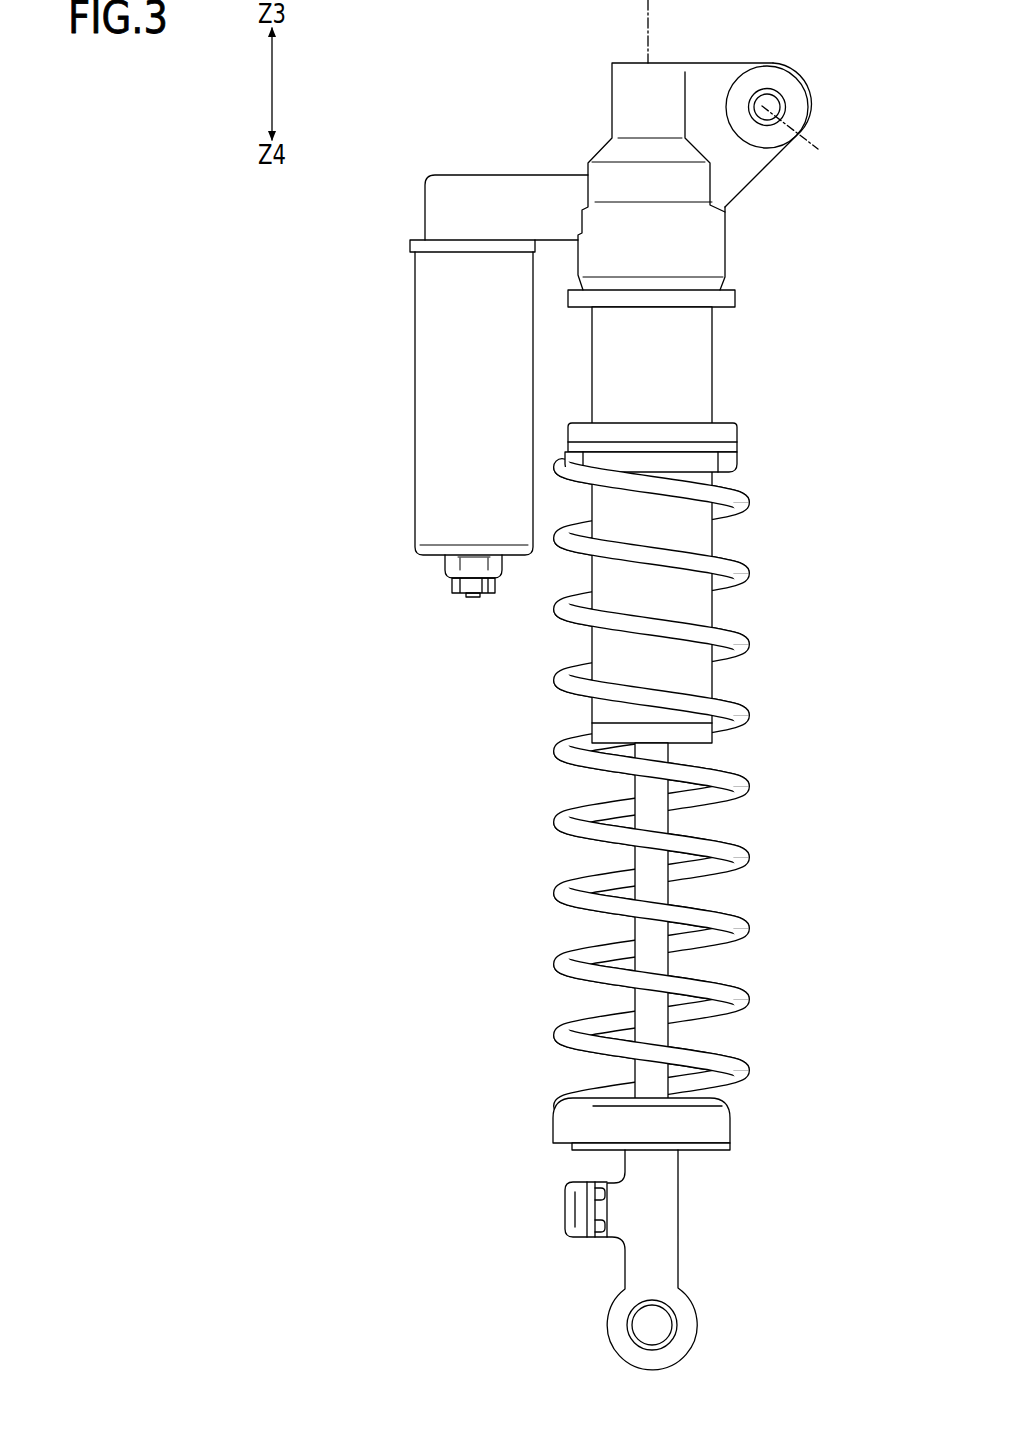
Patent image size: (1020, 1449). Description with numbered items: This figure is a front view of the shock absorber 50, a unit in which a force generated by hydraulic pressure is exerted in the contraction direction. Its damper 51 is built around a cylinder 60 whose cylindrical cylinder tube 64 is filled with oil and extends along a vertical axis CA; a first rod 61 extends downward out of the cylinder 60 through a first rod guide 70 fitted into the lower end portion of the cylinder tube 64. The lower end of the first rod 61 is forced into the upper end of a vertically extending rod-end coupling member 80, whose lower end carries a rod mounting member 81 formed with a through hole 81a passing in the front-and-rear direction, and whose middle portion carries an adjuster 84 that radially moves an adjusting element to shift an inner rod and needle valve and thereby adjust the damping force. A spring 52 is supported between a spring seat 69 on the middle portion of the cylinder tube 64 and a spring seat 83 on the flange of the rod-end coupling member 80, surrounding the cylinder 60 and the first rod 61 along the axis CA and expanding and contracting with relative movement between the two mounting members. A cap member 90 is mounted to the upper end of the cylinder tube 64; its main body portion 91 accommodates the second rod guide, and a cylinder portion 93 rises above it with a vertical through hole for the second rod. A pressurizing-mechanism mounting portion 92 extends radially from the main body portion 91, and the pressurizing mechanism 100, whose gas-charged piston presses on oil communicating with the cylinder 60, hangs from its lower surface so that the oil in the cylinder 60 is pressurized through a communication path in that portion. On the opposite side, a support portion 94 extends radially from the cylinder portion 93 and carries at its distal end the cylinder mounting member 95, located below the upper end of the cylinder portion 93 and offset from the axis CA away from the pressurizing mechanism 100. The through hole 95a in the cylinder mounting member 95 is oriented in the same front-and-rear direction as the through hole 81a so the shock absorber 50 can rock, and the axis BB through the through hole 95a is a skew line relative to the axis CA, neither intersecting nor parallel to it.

The shock absorber 50 is at (368, 328).
The damper 51 is at (805, 344).
The spring 52 is at (578, 898).
The cylinder 60 is at (742, 392).
The first rod 61 is at (659, 808).
The cylinder tube 64 is at (697, 352).
The spring seat 69 is at (730, 447).
The first rod guide 70 is at (698, 740).
The rod-end coupling member 80 is at (665, 1222).
The rod mounting member 81 is at (688, 1317).
The through hole 81a is at (630, 1325).
The spring seat 83 is at (730, 1145).
The adjuster 84 is at (565, 1207).
The cap member 90 is at (750, 204).
The main body portion 91 is at (710, 250).
The pressurizing-mechanism mounting portion 92 is at (503, 192).
The cylinder portion 93 is at (629, 72).
The support portion 94 is at (720, 75).
The cylinder mounting member 95 is at (793, 107).
The through hole 95a is at (776, 92).
The pressurizing mechanism 100 is at (425, 425).
The axis CA is at (650, 33).
The axis BB is at (800, 144).